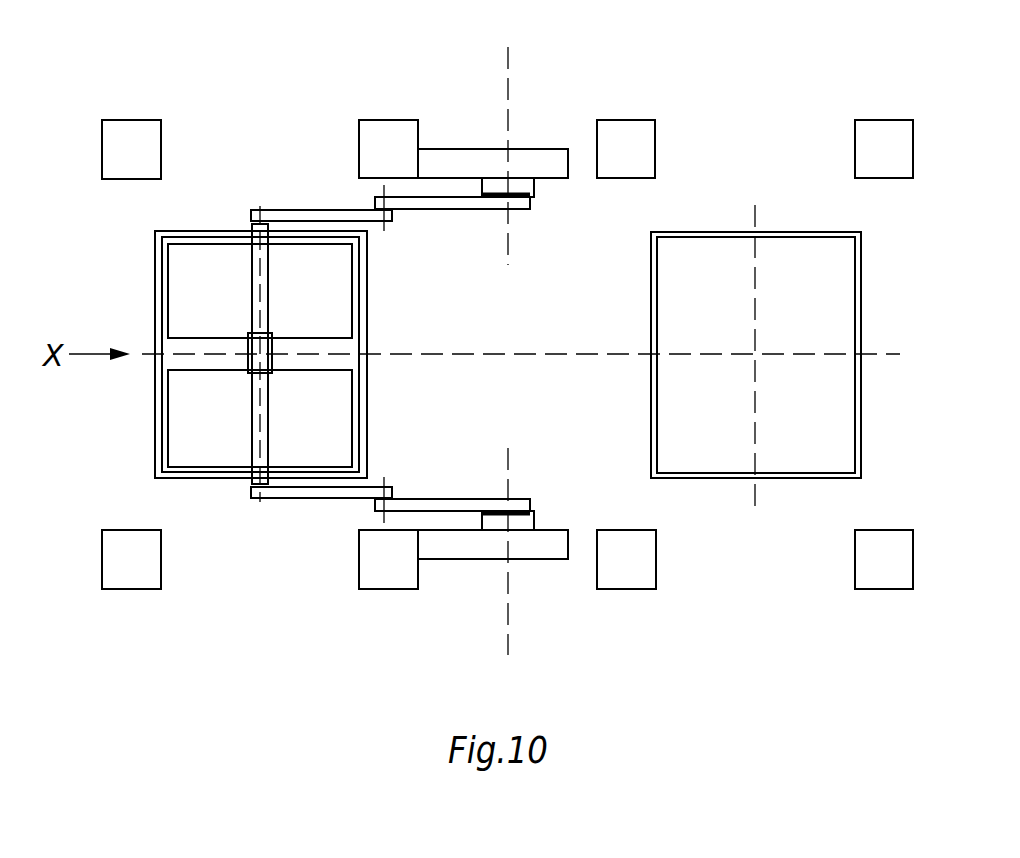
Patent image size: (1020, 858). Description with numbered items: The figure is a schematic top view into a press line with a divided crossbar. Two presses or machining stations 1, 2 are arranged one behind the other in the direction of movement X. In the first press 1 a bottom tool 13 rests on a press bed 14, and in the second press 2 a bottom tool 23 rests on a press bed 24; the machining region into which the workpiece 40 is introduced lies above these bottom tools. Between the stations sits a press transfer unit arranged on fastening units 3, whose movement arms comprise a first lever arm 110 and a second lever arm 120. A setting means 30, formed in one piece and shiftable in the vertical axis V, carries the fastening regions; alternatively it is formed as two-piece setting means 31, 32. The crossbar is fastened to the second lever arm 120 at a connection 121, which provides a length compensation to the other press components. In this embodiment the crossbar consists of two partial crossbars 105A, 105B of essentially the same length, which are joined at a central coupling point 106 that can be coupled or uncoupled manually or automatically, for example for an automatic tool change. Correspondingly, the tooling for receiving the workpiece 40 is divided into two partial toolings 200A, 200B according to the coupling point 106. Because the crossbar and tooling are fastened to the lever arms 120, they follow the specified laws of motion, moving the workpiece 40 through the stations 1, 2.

The press 1 is at (273, 110).
The press 2 is at (748, 135).
The fastening unit 3 is at (480, 148).
The setting means 30 is at (515, 188).
The two-piece setting means 31 is at (508, 187).
The two-piece setting means 32 is at (508, 187).
The first lever arm 110 is at (485, 209).
The second lever arm 120 is at (300, 208).
The connection 121 is at (255, 217).
The partial crossbar 105A is at (248, 280).
The partial crossbar 105B is at (250, 447).
The coupling point 106 is at (247, 347).
The partial tooling 200A is at (362, 284).
The partial tooling 200B is at (353, 428).
The workpiece 40 is at (160, 442).
The bottom tool 13 is at (202, 375).
The press bed 14 is at (155, 470).
The bottom tool 23 is at (655, 402).
The press bed 24 is at (652, 472).